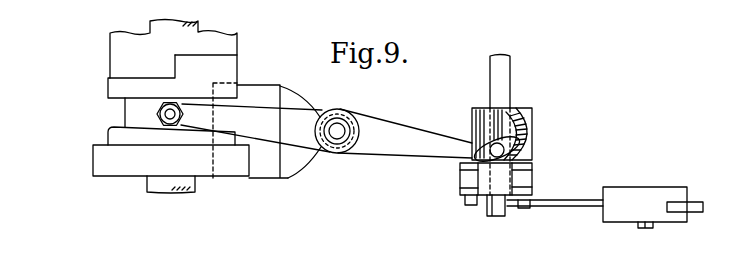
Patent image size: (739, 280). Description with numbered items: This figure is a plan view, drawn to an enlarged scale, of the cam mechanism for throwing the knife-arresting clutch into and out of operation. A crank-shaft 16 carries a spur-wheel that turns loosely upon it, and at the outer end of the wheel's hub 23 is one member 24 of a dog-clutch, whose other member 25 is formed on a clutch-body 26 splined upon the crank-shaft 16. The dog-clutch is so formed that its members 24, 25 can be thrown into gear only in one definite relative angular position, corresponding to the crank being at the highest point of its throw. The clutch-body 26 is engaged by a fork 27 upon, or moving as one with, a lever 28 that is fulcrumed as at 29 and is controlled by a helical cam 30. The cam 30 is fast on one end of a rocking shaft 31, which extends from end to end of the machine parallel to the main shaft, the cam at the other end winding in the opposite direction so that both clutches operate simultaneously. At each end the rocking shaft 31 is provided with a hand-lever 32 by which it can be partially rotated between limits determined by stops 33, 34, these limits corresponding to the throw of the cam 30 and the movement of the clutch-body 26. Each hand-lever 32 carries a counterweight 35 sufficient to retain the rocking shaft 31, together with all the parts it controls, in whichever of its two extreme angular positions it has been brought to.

The crank-shaft 16 is at (196, 186).
The hub 23 is at (237, 47).
The dog-clutch member 24 is at (142, 66).
The dog-clutch member 25 is at (206, 116).
The clutch-body 26 is at (171, 137).
The fork 27 is at (258, 131).
The lever 28 is at (430, 137).
The fulcrum 29 is at (338, 128).
The helical cam 30 is at (532, 121).
The rocking shaft 31 is at (494, 73).
The hand-lever 32 is at (570, 201).
The stop 33 is at (465, 199).
The stop 34 is at (522, 208).
The counterweight 35 is at (653, 207).